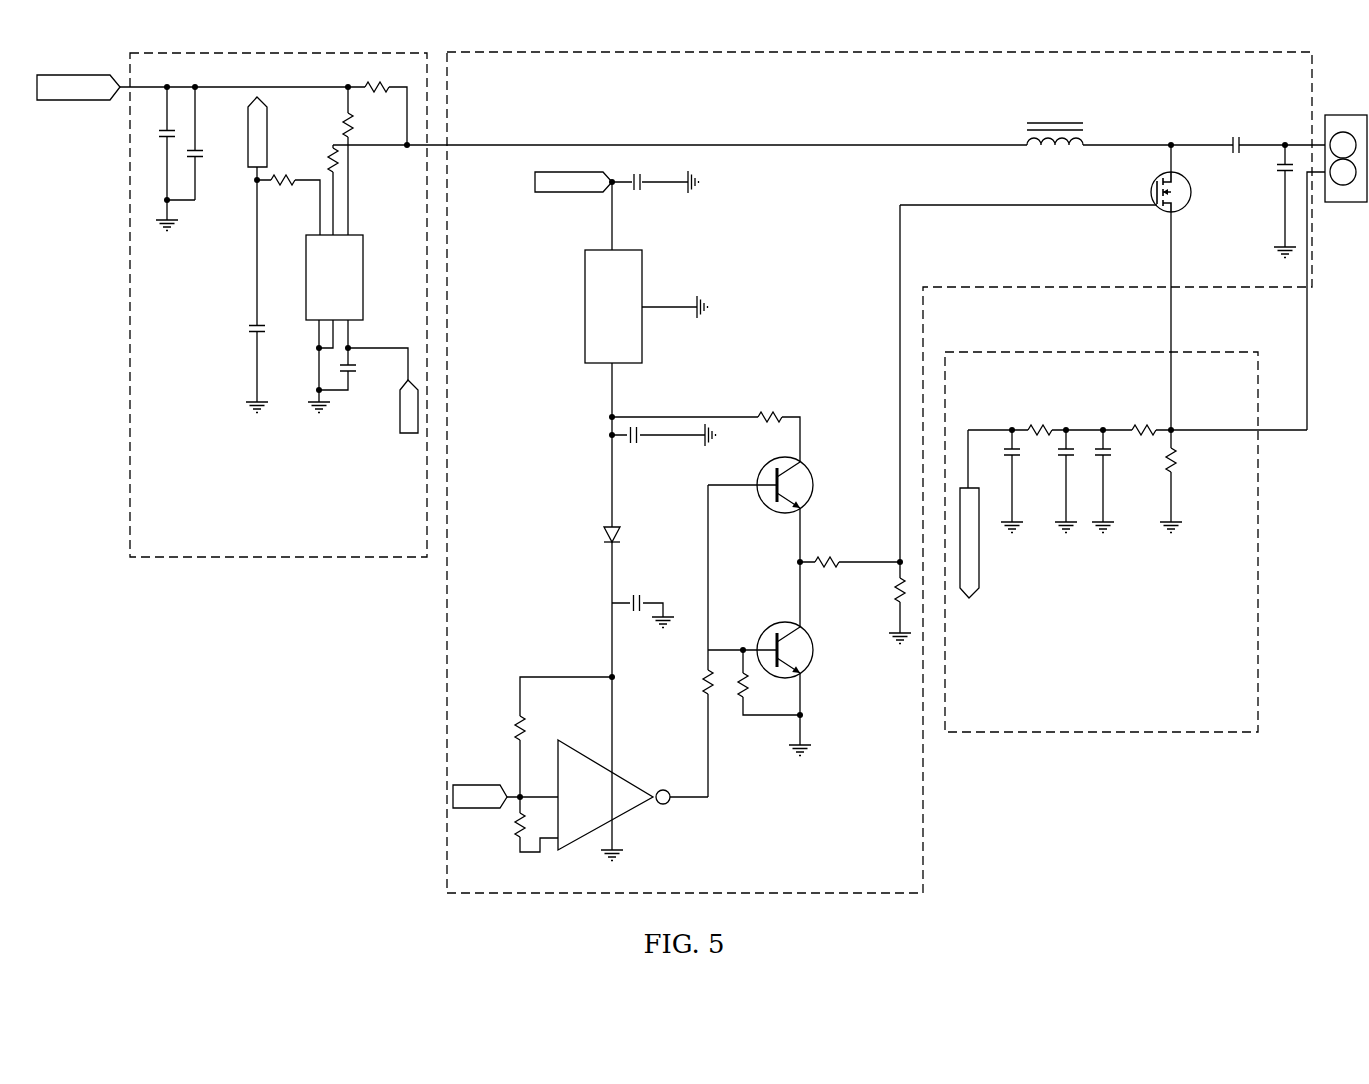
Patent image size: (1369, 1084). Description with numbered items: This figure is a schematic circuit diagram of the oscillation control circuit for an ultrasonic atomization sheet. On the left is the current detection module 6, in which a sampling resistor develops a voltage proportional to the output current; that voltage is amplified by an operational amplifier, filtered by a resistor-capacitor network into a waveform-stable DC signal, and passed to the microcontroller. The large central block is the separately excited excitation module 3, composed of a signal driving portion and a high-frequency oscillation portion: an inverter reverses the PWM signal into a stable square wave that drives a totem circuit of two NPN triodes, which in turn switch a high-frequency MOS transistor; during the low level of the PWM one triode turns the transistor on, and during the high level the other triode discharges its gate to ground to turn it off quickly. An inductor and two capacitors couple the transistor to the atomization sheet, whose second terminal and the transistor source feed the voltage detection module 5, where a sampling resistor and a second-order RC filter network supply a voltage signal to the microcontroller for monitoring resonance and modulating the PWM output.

The separately excited excitation module 3 is at (850, 472).
The voltage detection module 5 is at (1126, 542).
The current detection module 6 is at (232, 305).